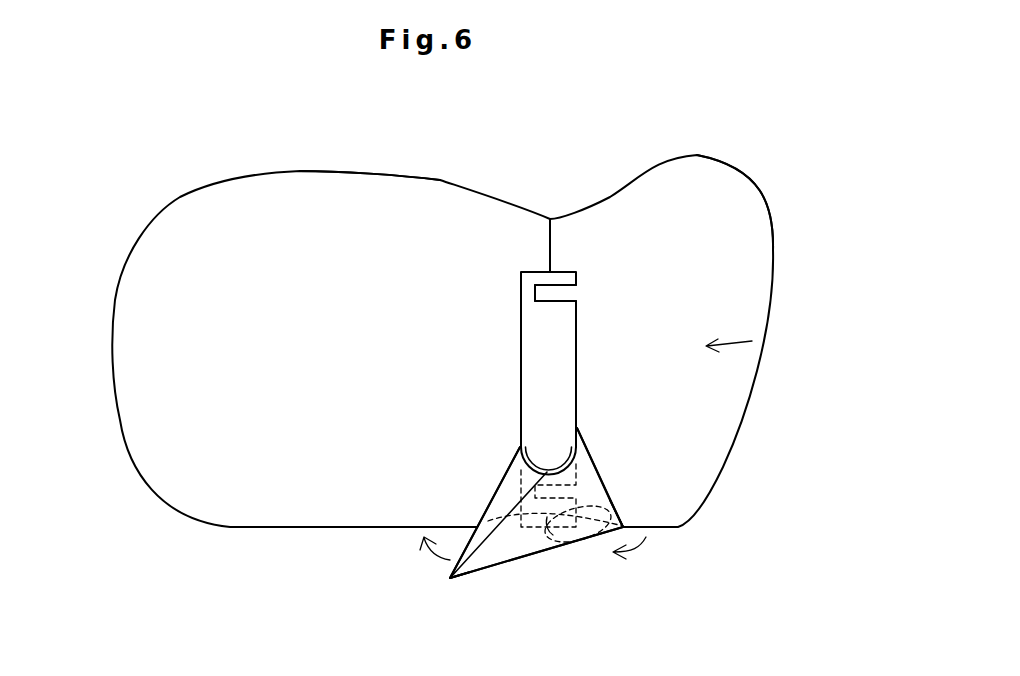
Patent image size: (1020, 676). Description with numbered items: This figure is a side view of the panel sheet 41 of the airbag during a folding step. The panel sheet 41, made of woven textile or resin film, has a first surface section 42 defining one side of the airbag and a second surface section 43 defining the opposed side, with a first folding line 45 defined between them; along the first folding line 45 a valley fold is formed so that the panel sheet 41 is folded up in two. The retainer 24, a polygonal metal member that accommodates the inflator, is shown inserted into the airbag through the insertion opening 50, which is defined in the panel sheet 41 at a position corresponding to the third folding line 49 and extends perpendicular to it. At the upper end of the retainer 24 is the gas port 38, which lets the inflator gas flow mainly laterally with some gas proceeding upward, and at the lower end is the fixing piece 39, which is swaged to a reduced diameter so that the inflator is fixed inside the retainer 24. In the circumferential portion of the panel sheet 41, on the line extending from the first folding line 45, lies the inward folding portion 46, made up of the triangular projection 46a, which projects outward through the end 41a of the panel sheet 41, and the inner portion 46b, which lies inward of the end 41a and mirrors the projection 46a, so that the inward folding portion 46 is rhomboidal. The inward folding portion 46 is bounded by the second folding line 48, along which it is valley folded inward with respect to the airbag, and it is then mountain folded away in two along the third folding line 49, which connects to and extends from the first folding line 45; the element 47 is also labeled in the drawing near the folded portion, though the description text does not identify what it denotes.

The panel sheet 41 is at (750, 125).
The end of the panel sheet 41a is at (580, 540).
The first surface section 42 is at (748, 194).
The second surface section 43 is at (375, 187).
The first folding line 45 is at (554, 242).
The retainer 24 is at (525, 279).
The gas port 38 is at (567, 294).
The insertion opening 50 is at (578, 433).
The inward folding portion 46 is at (467, 575).
The projection 46a is at (503, 553).
The inner portion 46b is at (516, 468).
The hinge pin 47 is at (443, 536).
The second folding line 48 is at (503, 468).
The third folding line 49 is at (490, 526).
The fixing piece 39 is at (618, 517).